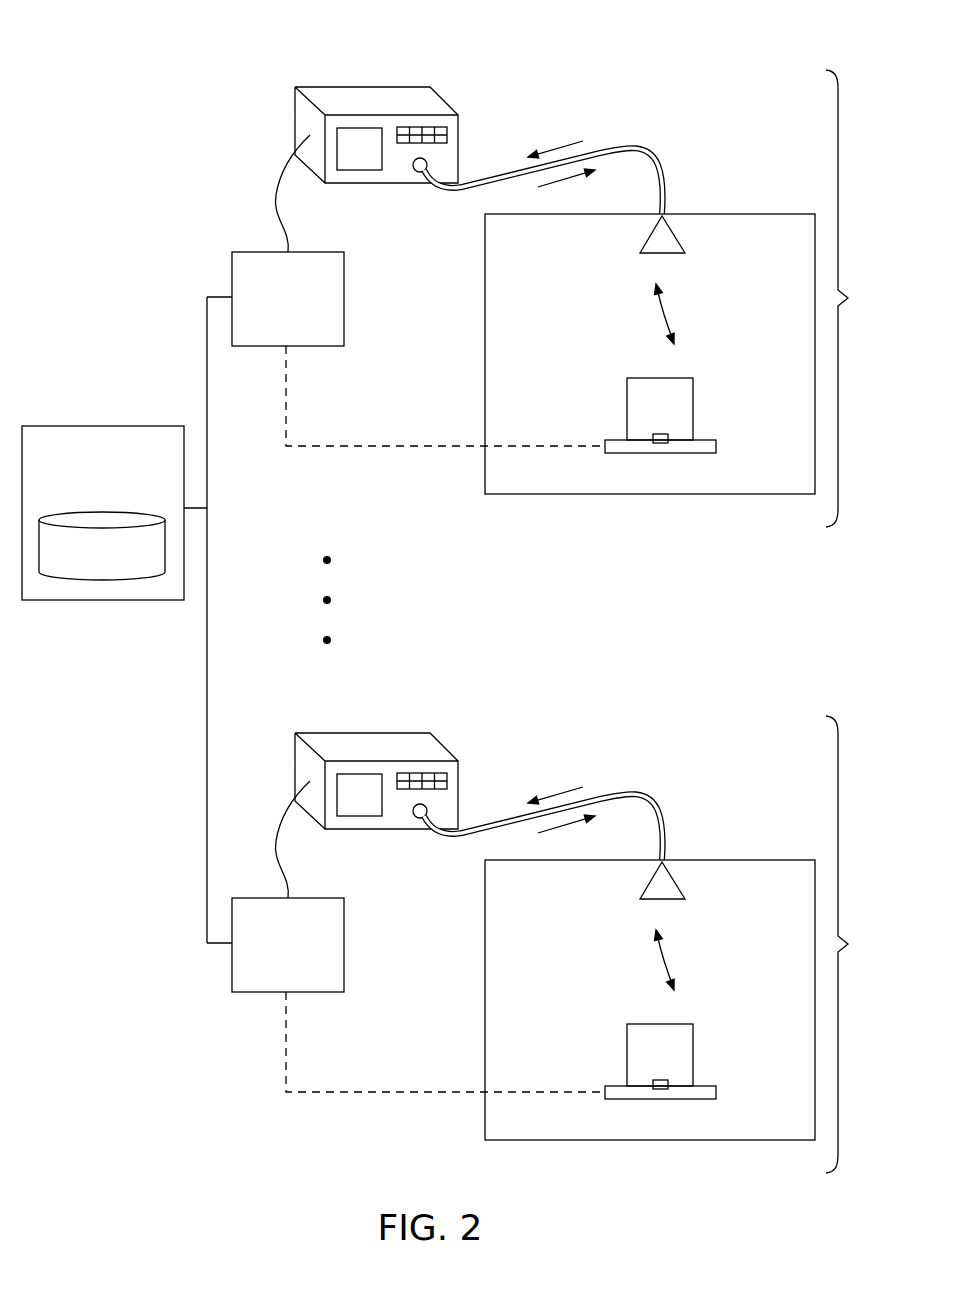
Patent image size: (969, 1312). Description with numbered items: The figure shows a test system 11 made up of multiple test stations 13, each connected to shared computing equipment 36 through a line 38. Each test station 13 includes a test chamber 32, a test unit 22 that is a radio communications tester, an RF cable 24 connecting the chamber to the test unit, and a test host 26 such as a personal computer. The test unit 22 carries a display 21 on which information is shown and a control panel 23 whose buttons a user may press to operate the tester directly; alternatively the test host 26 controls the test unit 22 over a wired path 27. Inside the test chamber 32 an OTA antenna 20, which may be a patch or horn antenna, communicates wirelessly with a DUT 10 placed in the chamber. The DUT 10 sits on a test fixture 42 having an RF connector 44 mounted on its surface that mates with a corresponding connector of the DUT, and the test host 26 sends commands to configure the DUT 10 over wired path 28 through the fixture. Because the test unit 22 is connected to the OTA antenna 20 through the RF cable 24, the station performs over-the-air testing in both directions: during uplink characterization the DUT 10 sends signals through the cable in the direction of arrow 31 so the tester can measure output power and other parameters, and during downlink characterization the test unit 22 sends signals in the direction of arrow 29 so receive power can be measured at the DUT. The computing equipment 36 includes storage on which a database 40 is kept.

The test system 11 is at (122, 44).
The test unit 22 is at (427, 72).
The display 21 is at (349, 160).
The control panel 23 is at (447, 133).
The RF cable 24 is at (660, 152).
The arrow 31 is at (556, 148).
The arrow 29 is at (565, 180).
The test chamber 32 is at (763, 210).
The OTA antenna 20 is at (677, 232).
The DUT 10 is at (687, 378).
The test fixture 42 is at (716, 446).
The RF connector 44 is at (660, 443).
The wired path 28 is at (384, 450).
The wired path 27 is at (272, 186).
The test host 26 is at (344, 280).
The test station 13 is at (853, 621).
The computing equipment 36 is at (93, 426).
The line 38 is at (207, 468).
The database 40 is at (93, 567).